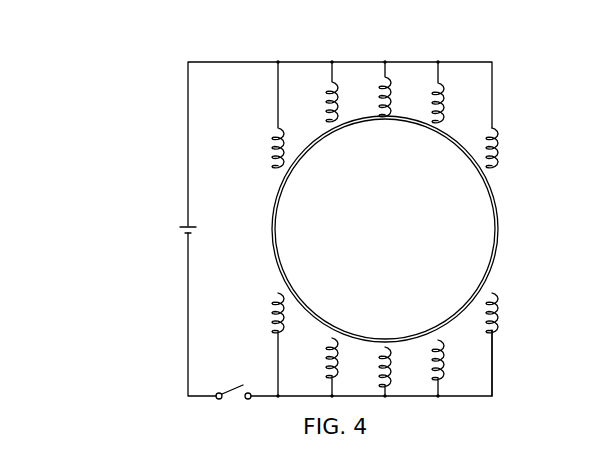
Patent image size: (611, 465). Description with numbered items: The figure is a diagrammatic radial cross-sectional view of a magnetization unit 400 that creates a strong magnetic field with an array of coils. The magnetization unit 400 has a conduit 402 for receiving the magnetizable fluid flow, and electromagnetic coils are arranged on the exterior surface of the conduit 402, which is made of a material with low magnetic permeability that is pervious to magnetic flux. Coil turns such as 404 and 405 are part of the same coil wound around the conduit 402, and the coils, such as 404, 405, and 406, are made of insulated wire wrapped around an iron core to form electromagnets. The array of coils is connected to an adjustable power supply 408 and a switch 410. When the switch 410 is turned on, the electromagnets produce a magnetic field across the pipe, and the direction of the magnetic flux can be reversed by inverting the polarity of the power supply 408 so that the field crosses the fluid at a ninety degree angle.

The magnetization unit 400 is at (84, 112).
The conduit 402 is at (497, 248).
The coil turn 404 is at (502, 147).
The coil turn 405 is at (487, 376).
The coil 406 is at (429, 82).
The adjustable power supply 408 is at (165, 228).
The switch 410 is at (223, 392).